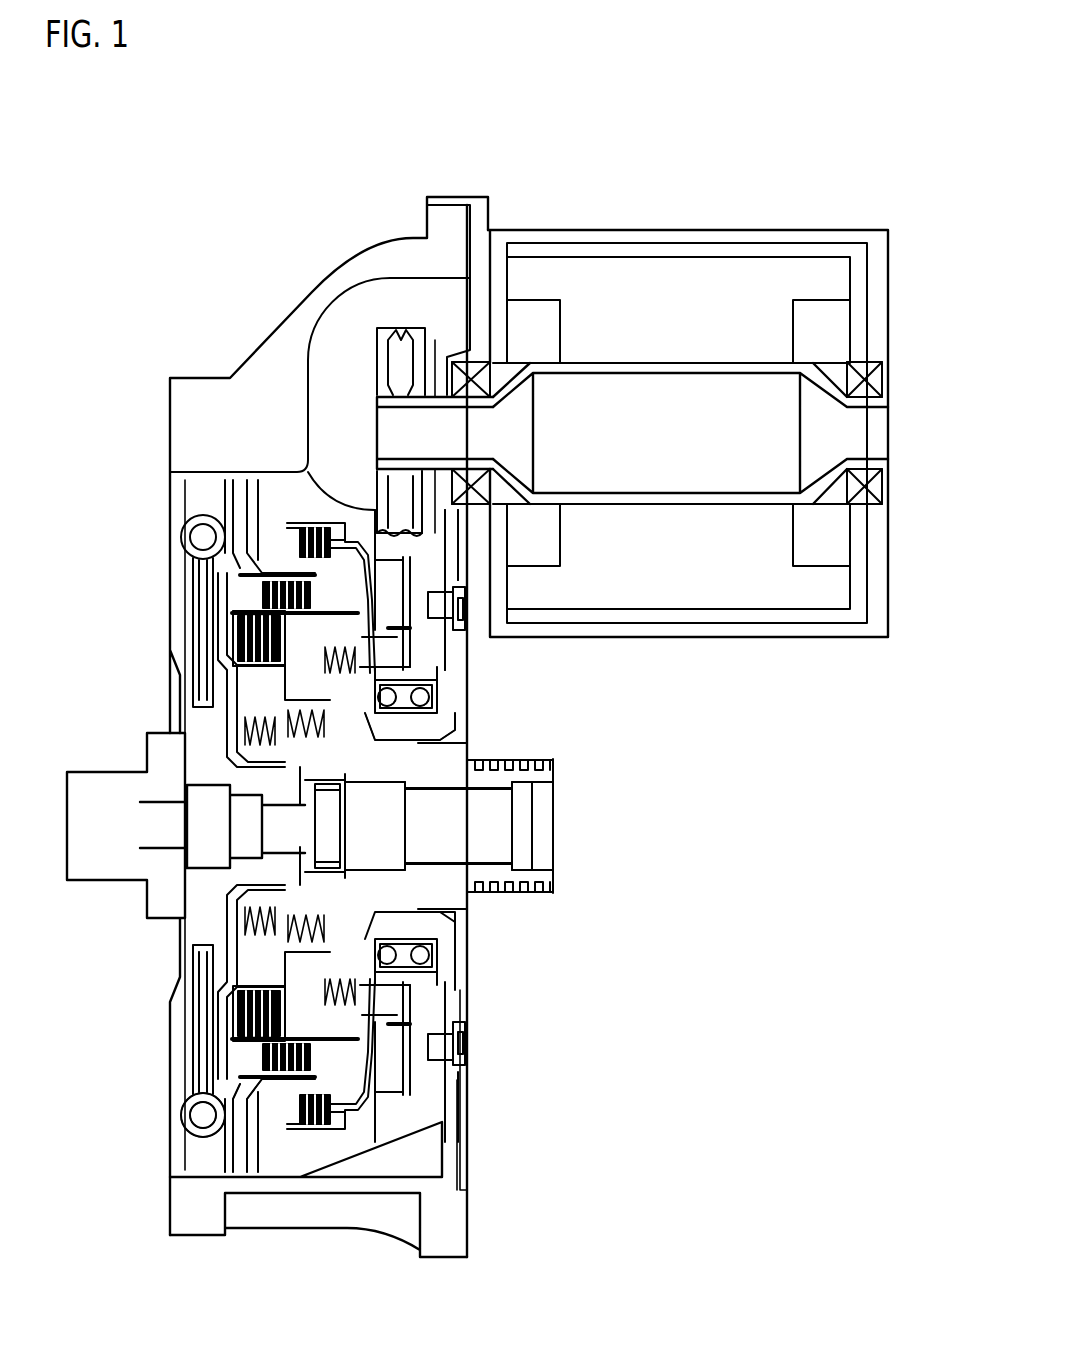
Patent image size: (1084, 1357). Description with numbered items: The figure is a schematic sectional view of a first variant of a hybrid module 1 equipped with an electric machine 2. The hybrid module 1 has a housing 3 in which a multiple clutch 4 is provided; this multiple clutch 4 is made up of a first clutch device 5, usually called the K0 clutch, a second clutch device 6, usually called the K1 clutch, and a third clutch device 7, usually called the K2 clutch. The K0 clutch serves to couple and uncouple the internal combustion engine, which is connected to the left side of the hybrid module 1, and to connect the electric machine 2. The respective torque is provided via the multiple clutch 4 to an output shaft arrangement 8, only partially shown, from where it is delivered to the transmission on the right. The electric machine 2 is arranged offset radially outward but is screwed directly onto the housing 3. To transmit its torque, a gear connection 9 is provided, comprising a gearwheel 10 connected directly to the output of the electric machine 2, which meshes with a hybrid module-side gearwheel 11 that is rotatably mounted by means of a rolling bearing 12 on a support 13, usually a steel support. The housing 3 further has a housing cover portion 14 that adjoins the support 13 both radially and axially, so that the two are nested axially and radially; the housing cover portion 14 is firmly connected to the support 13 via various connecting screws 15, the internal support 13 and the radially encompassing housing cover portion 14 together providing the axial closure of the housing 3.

The hybrid module 1 is at (528, 1040).
The electric machine 2 is at (922, 432).
The housing 3 is at (392, 1217).
The multiple clutch 4 is at (200, 1000).
The first clutch device 5 is at (316, 512).
The second clutch device 6 is at (268, 570).
The third clutch device 7 is at (222, 628).
The output shaft arrangement 8 is at (565, 912).
The gear connection 9 is at (445, 338).
The gearwheel 10 is at (398, 348).
The hybrid module-side gearwheel 11 is at (413, 643).
The rolling bearing 12 is at (432, 707).
The support 13 is at (457, 955).
The housing cover portion 14 is at (452, 1107).
The connecting screws 15 is at (465, 613).